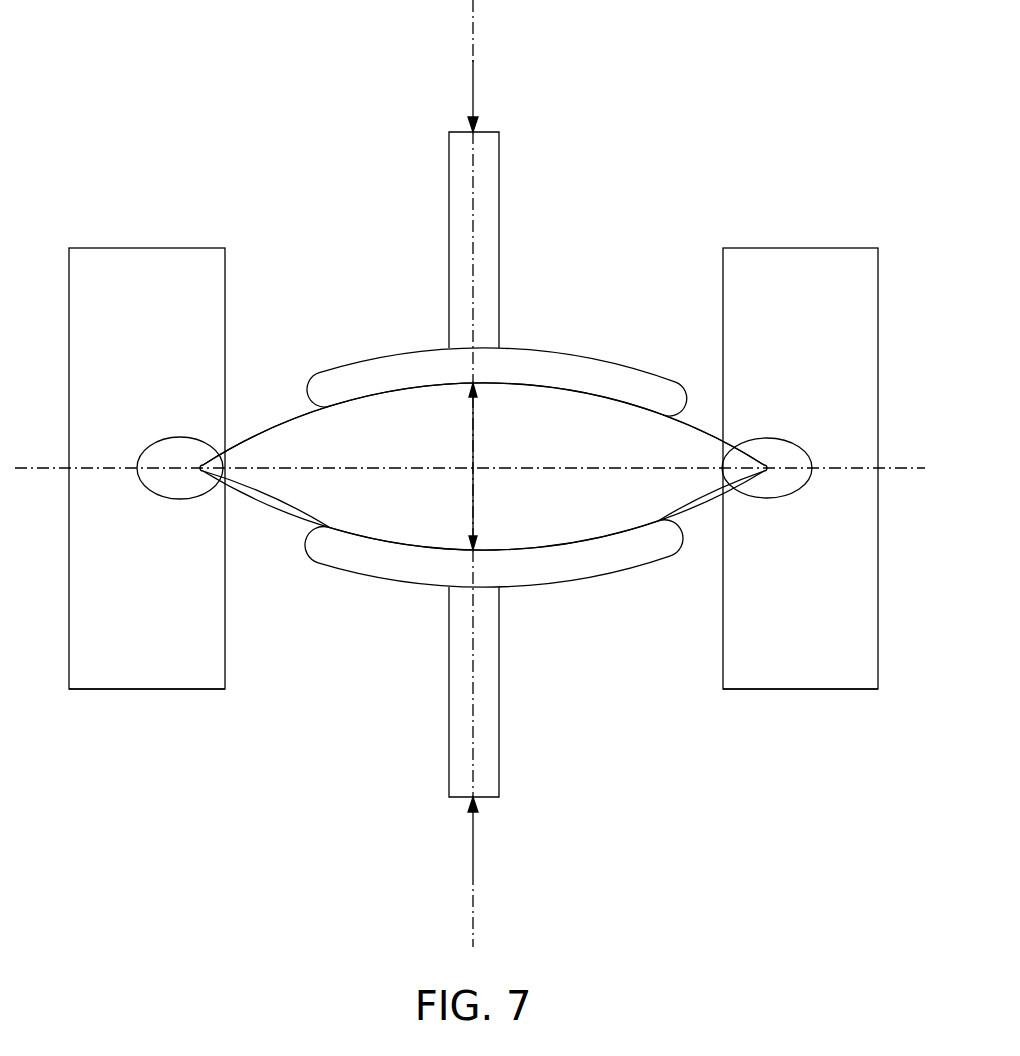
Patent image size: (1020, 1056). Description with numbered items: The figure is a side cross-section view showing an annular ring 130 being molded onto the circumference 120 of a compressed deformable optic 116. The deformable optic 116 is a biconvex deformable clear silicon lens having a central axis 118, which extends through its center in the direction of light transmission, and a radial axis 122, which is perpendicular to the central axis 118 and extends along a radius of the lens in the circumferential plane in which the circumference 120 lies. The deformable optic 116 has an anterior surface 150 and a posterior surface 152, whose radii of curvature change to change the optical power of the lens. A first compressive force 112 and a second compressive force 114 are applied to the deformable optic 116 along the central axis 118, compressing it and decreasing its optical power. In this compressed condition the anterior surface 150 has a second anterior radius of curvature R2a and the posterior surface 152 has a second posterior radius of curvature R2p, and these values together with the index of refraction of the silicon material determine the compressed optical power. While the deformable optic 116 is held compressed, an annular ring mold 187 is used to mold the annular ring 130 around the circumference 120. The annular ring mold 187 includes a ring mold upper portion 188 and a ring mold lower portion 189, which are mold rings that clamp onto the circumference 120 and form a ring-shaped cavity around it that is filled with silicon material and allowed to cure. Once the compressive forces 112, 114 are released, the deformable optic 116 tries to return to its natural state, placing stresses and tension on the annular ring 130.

The first compressive force 112 is at (473, 85).
The second compressive force 114 is at (473, 840).
The deformable optic 116 is at (588, 415).
The central axis 118 is at (473, 20).
The circumference 120 is at (225, 455).
The radial axis 122 is at (43, 470).
The annular ring 130 is at (172, 483).
The anterior surface 150 is at (380, 400).
The posterior surface 152 is at (403, 541).
The annular ring mold 187 is at (473, 465).
The ring mold upper portion 188 is at (146, 265).
The ring mold lower portion 189 is at (98, 672).
The second anterior radius of curvature R2a is at (478, 427).
The second posterior radius of curvature R2p is at (478, 518).